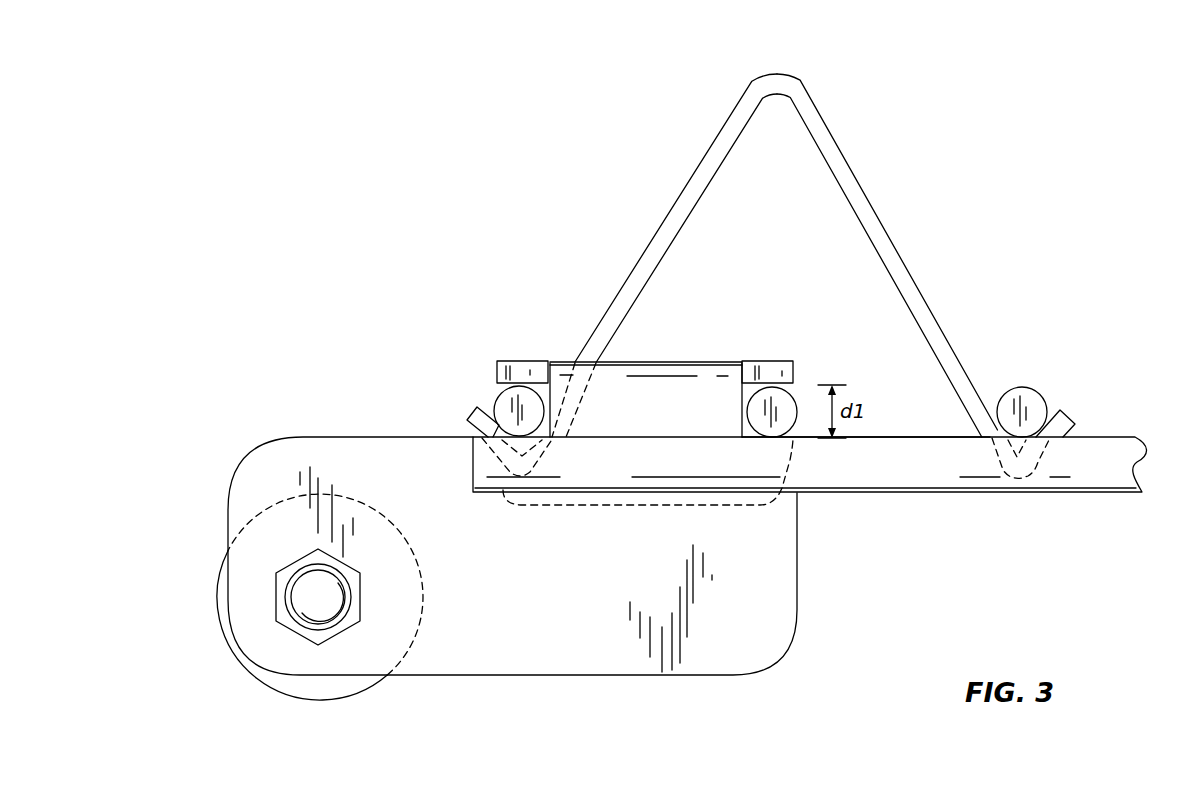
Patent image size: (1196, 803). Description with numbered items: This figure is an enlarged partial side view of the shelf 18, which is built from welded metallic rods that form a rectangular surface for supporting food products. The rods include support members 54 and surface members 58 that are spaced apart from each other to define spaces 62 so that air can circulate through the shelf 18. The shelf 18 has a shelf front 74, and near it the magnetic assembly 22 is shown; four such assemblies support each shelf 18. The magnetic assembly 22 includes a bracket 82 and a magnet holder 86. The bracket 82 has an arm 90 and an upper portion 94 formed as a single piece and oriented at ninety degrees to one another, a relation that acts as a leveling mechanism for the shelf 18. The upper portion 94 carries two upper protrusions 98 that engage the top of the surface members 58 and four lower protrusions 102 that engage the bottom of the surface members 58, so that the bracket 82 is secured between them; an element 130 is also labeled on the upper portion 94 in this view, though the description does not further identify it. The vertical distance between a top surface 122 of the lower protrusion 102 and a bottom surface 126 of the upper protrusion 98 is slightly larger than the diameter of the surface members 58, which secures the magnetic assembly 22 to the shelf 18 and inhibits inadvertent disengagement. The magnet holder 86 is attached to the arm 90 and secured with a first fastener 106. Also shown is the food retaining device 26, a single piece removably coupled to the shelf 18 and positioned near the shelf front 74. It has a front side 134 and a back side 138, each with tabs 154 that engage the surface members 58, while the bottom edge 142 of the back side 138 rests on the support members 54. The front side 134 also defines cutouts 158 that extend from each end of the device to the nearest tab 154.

The shelf 18 is at (810, 423).
The magnetic assembly 22 is at (514, 606).
The food retaining device 26 is at (786, 234).
The support members 54 is at (1070, 463).
The surface members 58 is at (1030, 392).
The spaces 62 is at (914, 404).
The shelf front 74 is at (494, 404).
The bracket 82 is at (623, 337).
The magnet holder 86 is at (222, 597).
The arm 90 is at (535, 633).
The upper portion 94 is at (642, 362).
The upper protrusions 98 is at (512, 364).
The lower protrusions 102 is at (763, 497).
The first fastener 106 is at (305, 605).
The top surface 122 is at (798, 433).
The bottom surface 126 is at (792, 392).
The cross member 130 is at (566, 345).
The front side 134 is at (683, 178).
The back side 138 is at (850, 157).
The bottom edge 142 is at (995, 440).
The tabs 154 is at (470, 412).
The cutouts 158 is at (566, 403).